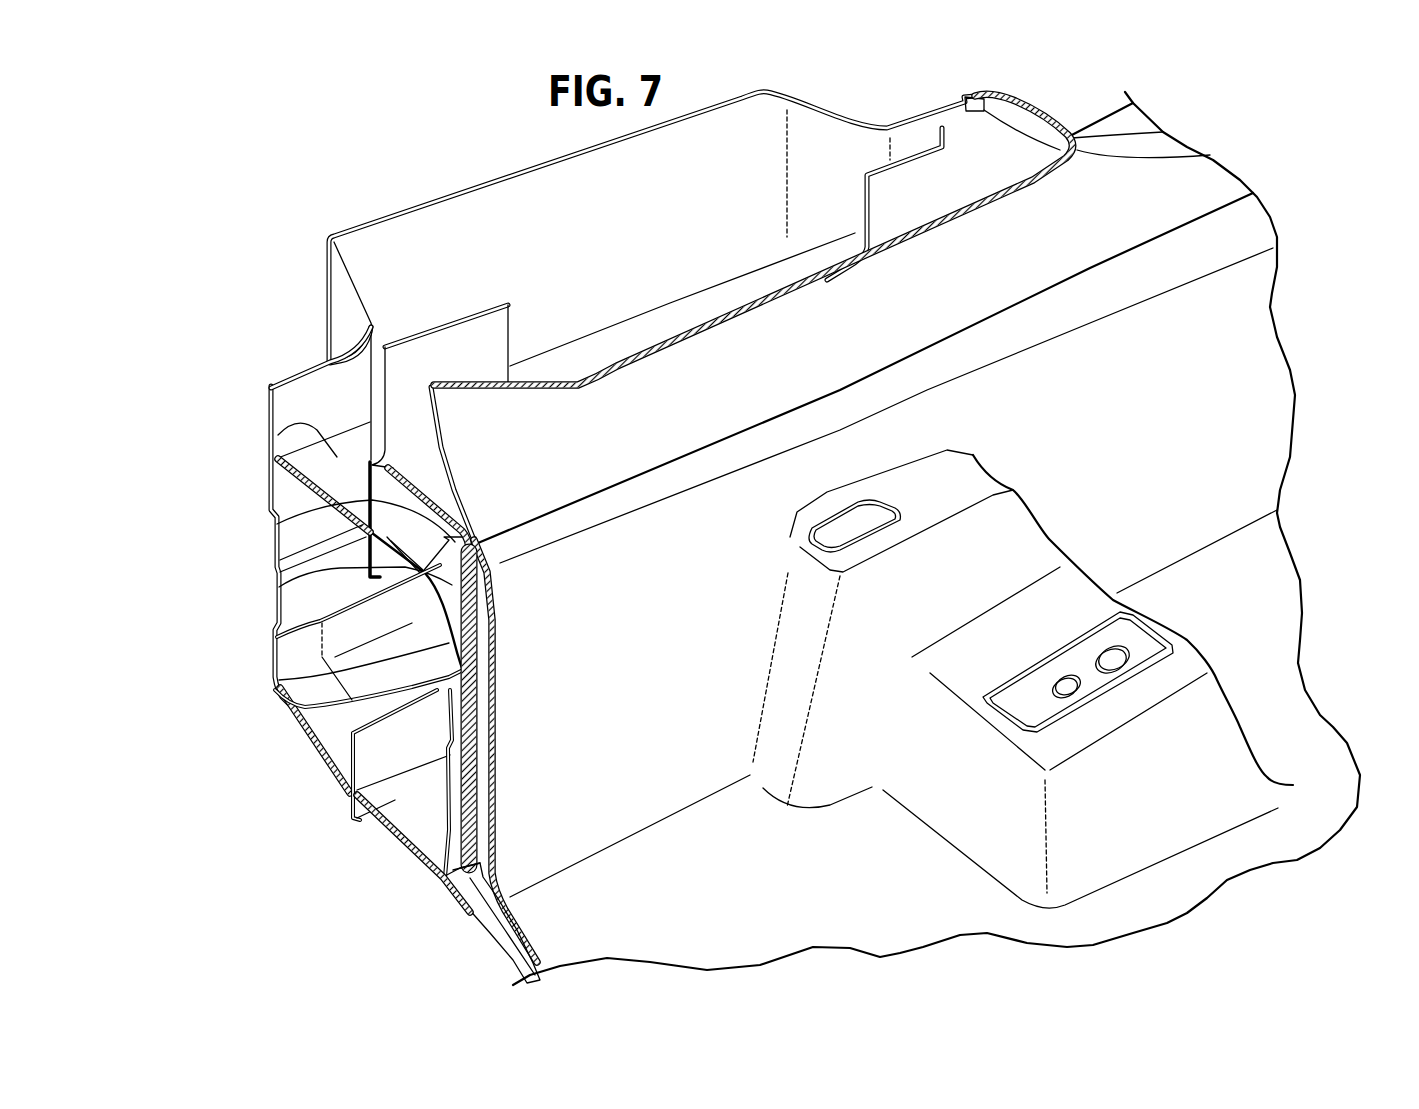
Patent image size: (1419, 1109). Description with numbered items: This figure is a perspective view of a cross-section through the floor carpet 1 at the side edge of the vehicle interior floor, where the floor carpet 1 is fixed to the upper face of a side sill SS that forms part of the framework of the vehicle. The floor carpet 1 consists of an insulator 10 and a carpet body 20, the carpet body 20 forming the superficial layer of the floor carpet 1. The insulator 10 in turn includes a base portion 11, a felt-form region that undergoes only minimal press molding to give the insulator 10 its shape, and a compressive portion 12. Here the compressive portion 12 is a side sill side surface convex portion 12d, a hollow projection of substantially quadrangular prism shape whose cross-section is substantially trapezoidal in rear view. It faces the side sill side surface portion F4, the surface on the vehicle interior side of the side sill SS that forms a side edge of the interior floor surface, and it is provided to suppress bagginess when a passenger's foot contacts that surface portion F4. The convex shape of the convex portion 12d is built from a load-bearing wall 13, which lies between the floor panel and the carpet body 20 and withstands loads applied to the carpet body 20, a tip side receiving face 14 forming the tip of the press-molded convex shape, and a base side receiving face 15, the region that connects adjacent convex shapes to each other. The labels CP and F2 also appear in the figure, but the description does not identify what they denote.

The floor carpet 1 is at (560, 692).
The insulator 10 is at (472, 782).
The base portion 11 is at (467, 812).
The compressive portion 12 is at (293, 537).
The side sill side surface convex portion 12d is at (195, 512).
The load-bearing wall 13 is at (278, 528).
The tip side receiving face 14 is at (279, 657).
The base side receiving face 15 is at (279, 587).
The carpet body 20 is at (497, 726).
The cover panel CP is at (326, 306).
The side sill SS is at (282, 441).
The side sill side surface portion F4 is at (1324, 131).
The load F2 is at (1262, 162).